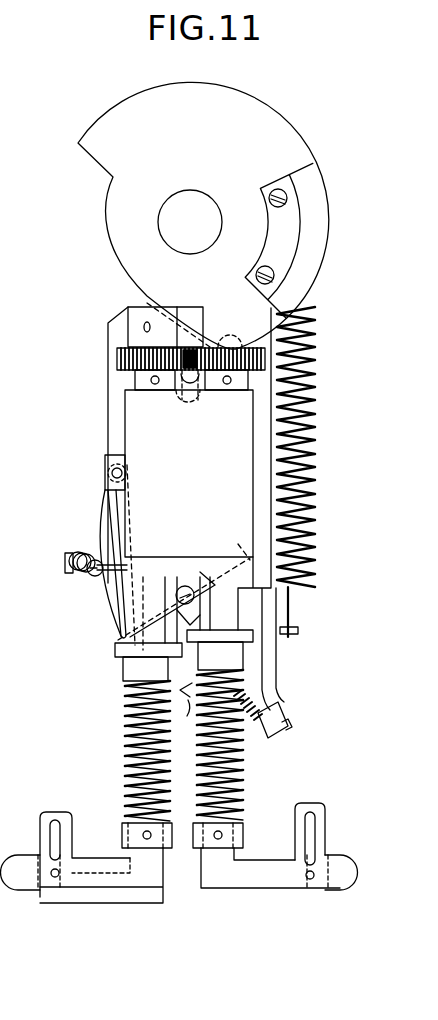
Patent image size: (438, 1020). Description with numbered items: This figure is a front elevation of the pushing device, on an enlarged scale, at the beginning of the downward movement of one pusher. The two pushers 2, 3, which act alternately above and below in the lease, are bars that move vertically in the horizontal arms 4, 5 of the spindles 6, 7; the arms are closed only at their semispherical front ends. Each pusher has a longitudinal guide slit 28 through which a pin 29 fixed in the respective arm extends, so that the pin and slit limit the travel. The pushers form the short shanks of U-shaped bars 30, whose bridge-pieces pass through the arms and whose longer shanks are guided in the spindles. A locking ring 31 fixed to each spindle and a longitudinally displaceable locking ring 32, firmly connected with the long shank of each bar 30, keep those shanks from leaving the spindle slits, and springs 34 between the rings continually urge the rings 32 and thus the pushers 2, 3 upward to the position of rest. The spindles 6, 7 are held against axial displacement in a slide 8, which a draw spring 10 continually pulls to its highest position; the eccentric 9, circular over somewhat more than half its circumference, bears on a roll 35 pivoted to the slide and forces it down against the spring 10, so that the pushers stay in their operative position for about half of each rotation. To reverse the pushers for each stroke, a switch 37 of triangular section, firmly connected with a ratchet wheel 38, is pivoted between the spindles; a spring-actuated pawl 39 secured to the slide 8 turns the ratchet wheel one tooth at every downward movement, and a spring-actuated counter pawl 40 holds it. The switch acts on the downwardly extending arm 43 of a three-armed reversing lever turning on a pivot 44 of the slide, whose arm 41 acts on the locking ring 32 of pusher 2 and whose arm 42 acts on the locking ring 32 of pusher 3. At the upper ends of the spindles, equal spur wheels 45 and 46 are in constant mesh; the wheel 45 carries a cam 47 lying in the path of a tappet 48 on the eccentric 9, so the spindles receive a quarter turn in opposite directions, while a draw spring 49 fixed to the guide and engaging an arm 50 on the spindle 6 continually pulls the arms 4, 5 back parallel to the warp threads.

The pusher 2 is at (40, 812).
The pusher 3 is at (322, 808).
The horizontal arm 4 is at (95, 866).
The horizontal arm 5 is at (273, 873).
The spindle 6 is at (125, 757).
The spindle 7 is at (243, 765).
The slide 8 is at (183, 463).
The eccentric 9 is at (133, 130).
The draw spring 10 is at (310, 377).
The longitudinal guide slit 28 is at (50, 836).
The pin 29 is at (55, 877).
The U-shaped bar 30 is at (103, 897).
The locking ring 31 is at (128, 832).
The locking ring 32 is at (125, 667).
The spring 34 is at (125, 782).
The roll 35 is at (130, 335).
The switch 37 is at (187, 690).
The ratchet wheel 38 is at (190, 722).
The spring-actuated pawl 39 is at (117, 508).
The spring-actuated counter pawl 40 is at (248, 685).
The arm of reversing lever 41 is at (124, 630).
The arm of reversing lever 42 is at (184, 582).
The arm of reversing lever 43 is at (184, 588).
The pivot 44 is at (153, 597).
The spur wheel 45 is at (143, 390).
The spur wheel 46 is at (233, 390).
The cam 47 is at (147, 303).
The tappet 48 is at (313, 238).
The draw spring 49 is at (67, 557).
The arm 50 is at (112, 560).